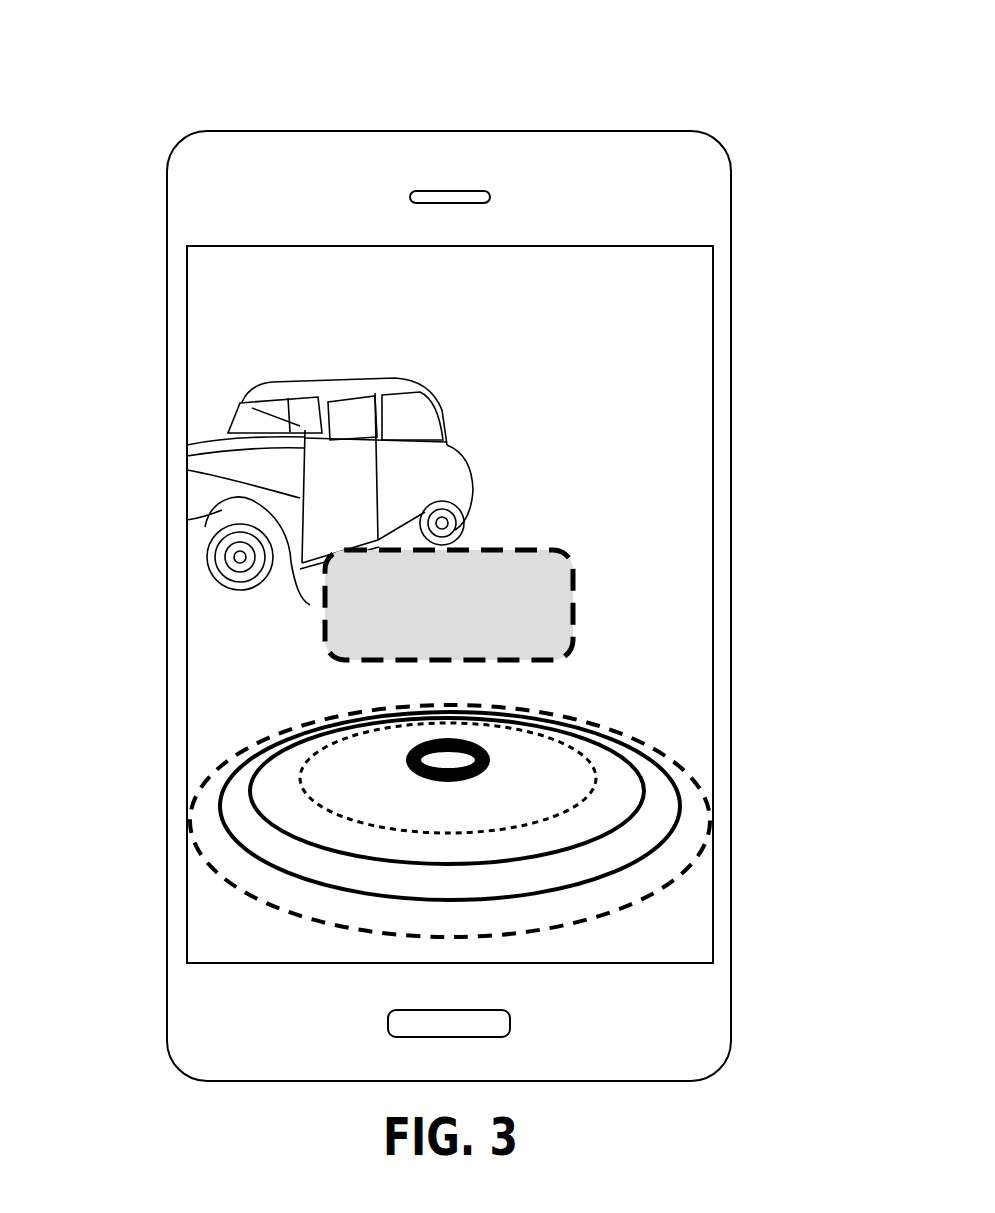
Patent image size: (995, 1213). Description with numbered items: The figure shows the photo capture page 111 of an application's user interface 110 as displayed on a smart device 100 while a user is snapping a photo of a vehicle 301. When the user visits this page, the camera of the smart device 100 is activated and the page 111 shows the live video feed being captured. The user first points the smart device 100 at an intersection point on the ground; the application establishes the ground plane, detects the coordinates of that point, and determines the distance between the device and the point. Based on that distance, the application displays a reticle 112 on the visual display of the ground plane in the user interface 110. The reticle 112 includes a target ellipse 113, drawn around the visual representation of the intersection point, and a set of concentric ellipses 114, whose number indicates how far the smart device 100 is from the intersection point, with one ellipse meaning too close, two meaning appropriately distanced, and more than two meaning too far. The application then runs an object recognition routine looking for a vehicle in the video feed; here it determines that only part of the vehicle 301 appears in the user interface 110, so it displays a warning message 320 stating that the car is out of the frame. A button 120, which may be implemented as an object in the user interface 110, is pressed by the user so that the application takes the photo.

The smart device 100 is at (675, 168).
The user interface 110 is at (272, 225).
The photo capture page 111 is at (449, 302).
The reticle 112 is at (273, 882).
The target ellipse 113 is at (397, 752).
The concentric ellipses 114 is at (210, 807).
The button 120 is at (373, 1045).
The vehicle 301 is at (237, 410).
The warning message 320 is at (583, 585).